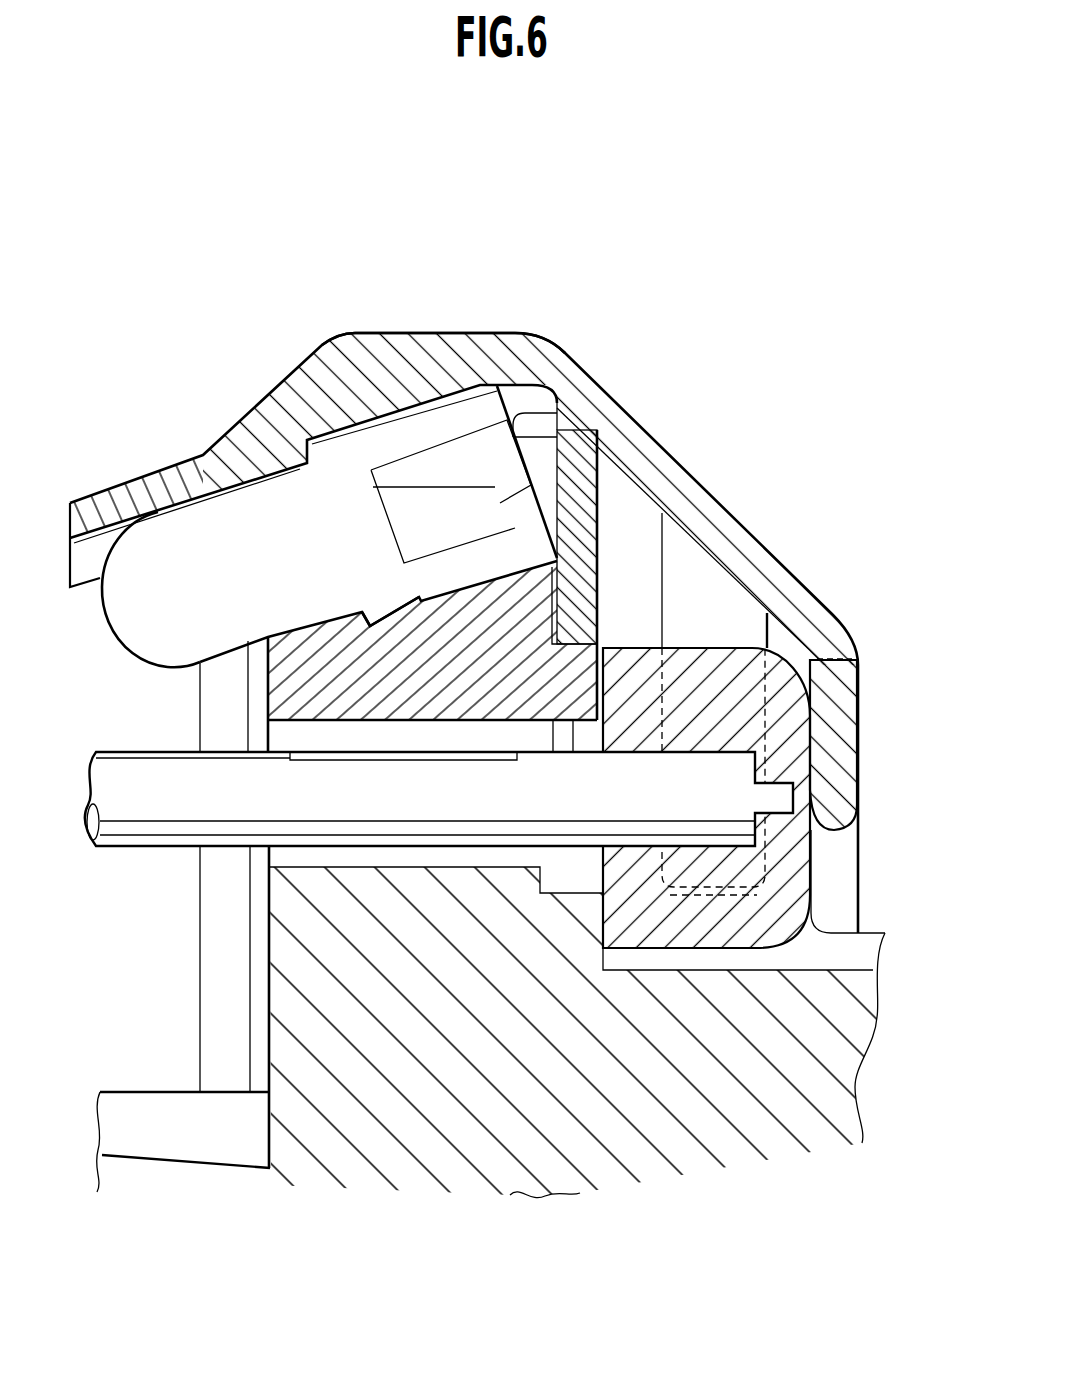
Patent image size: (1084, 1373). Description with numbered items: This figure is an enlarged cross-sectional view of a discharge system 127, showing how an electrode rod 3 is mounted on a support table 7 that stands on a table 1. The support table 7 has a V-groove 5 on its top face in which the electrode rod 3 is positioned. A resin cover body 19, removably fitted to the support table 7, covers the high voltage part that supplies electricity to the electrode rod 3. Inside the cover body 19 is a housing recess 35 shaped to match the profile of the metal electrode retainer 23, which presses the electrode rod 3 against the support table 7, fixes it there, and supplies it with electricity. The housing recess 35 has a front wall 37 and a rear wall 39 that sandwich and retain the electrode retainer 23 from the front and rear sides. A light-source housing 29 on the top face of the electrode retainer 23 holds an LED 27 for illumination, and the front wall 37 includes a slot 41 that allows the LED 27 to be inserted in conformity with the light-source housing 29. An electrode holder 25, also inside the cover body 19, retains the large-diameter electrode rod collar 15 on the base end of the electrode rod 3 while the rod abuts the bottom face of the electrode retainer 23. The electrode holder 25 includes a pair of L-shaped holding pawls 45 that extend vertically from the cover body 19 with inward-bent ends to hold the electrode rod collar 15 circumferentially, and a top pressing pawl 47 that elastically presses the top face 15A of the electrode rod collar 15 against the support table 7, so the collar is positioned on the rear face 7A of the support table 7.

The discharge system 127 is at (493, 270).
The slot 41 is at (172, 515).
The housing recess 35 is at (547, 507).
The cover body 19 is at (700, 463).
The rear wall 39 is at (590, 617).
The electrode holder 25 is at (872, 716).
The top pressing pawl 47 is at (843, 778).
The top face of the electrode rod collar 15A is at (812, 855).
The LED 27 is at (135, 632).
The front wall 37 is at (256, 694).
The light-source housing 29 is at (371, 627).
The electrode retainer 23 is at (457, 681).
The electrode rod 3 is at (162, 822).
The V-groove 5 is at (392, 868).
The support table 7 is at (388, 1006).
The rear face of the support table 7A is at (608, 960).
The holding pawl 45 is at (660, 877).
The electrode rod collar 15 is at (666, 944).
The table 1 is at (855, 1088).